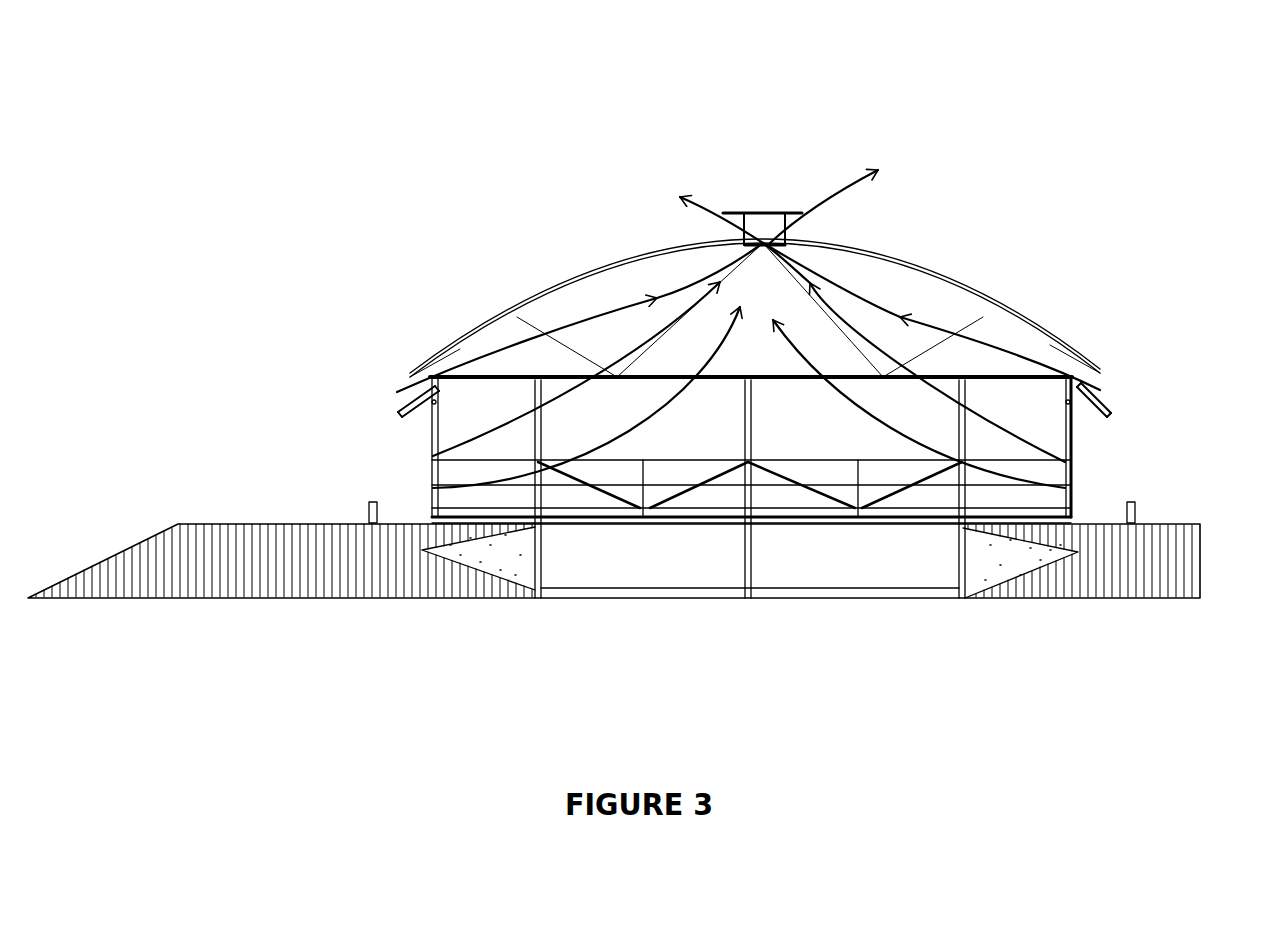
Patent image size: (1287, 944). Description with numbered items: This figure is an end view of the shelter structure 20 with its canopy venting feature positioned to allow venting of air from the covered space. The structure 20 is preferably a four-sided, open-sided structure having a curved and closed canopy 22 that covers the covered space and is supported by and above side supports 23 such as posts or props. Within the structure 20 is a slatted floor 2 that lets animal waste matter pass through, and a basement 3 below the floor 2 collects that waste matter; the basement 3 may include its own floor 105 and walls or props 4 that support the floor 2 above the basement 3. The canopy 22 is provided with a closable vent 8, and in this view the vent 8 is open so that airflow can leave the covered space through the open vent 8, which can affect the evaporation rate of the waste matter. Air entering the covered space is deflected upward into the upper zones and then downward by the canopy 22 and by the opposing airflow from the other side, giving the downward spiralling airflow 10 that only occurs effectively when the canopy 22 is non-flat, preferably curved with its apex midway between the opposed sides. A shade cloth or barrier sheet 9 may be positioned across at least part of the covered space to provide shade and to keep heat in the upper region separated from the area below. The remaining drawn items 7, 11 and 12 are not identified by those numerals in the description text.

The shelter structure 20 is at (273, 260).
The canopy 22 is at (927, 267).
The closable vent 8 is at (755, 210).
The shade cloth 9 is at (515, 375).
The eave 11 is at (430, 372).
The eave flap 7 is at (403, 395).
The airflow 10 is at (400, 395).
The wall ventilation openings 12 is at (433, 456).
The side supports 23 is at (435, 515).
The walls/props 4 is at (535, 568).
The floor 2 is at (557, 532).
The basement 3 is at (620, 570).
The basement floor 105 is at (675, 590).